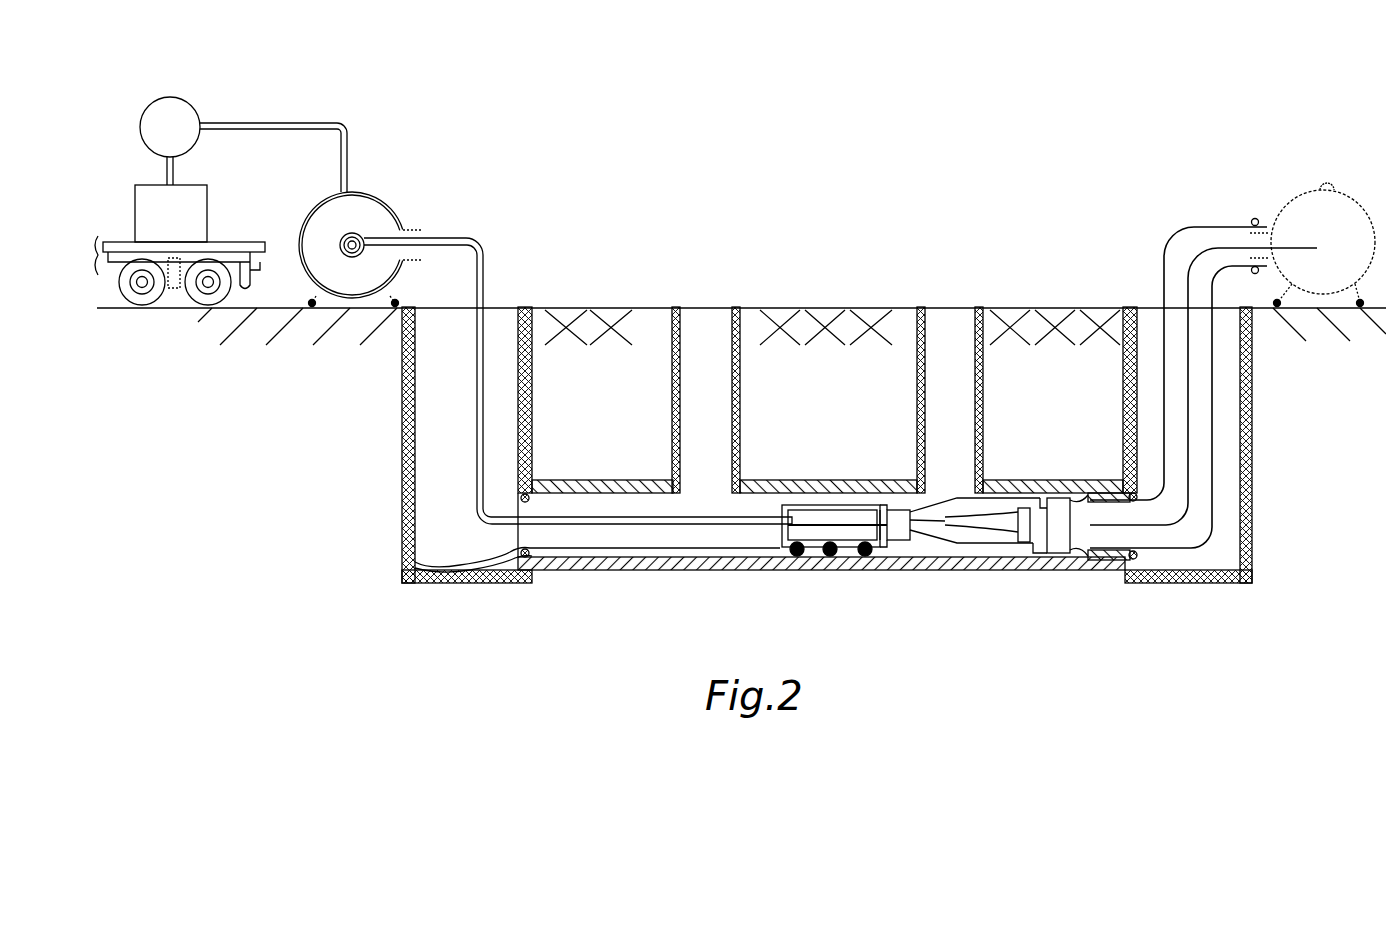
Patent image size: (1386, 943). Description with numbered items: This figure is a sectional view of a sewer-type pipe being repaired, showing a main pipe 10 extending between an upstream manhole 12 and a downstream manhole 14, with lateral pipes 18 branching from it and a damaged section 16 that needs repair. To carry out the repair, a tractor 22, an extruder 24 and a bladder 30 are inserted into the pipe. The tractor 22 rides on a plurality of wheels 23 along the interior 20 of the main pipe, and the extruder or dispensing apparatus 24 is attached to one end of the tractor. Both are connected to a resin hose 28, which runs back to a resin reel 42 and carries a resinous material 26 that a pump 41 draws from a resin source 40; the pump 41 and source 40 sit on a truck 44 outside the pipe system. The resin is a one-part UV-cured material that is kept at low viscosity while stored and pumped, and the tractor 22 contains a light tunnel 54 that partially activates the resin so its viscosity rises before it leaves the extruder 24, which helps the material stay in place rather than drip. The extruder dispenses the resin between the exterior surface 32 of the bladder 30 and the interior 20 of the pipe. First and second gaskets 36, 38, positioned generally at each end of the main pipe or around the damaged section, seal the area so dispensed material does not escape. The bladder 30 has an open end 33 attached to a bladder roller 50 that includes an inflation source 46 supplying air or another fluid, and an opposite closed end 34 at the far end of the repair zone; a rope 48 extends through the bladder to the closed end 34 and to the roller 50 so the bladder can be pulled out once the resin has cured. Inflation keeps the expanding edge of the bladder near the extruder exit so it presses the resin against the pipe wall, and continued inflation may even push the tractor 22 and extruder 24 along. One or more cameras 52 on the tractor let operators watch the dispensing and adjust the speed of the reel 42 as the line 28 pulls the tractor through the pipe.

The main pipe 10 is at (1115, 480).
The upstream manhole 12 is at (1123, 406).
The downstream manhole 14 is at (534, 383).
The damaged section 16 is at (1065, 479).
The lateral pipes 18 is at (672, 403).
The interior of the main pipe 20 is at (660, 493).
The tractor 22 is at (820, 520).
The wheels 23 is at (797, 556).
The extruder 24 is at (942, 488).
The resinous material 26 is at (1080, 556).
The resin hose 28 is at (497, 527).
The bladder 30 is at (1155, 263).
The exterior surface of the bladder 32 is at (1190, 548).
The open end of the bladder 33 is at (1257, 218).
The closed end of the bladder 34 is at (415, 558).
The first gasket 36 is at (1130, 575).
The second gasket 38 is at (540, 572).
The resin source 40 is at (182, 182).
The pump 41 is at (178, 99).
The resin reel 42 is at (358, 192).
The truck 44 is at (253, 243).
The inflation source 46 is at (1330, 185).
The rope 48 is at (1192, 400).
The bladder roller 50 is at (1302, 195).
The cameras 52 is at (887, 505).
The light tunnel 54 is at (850, 537).